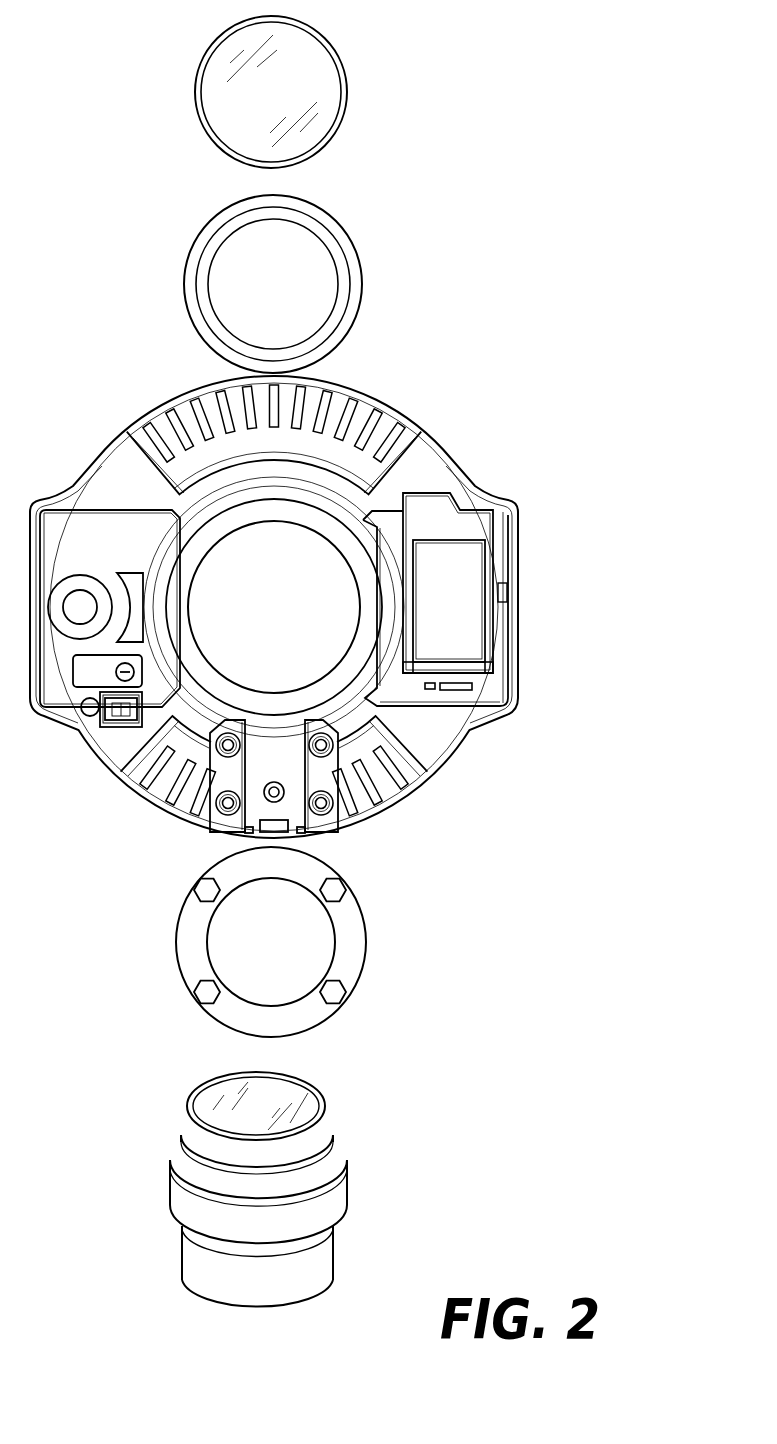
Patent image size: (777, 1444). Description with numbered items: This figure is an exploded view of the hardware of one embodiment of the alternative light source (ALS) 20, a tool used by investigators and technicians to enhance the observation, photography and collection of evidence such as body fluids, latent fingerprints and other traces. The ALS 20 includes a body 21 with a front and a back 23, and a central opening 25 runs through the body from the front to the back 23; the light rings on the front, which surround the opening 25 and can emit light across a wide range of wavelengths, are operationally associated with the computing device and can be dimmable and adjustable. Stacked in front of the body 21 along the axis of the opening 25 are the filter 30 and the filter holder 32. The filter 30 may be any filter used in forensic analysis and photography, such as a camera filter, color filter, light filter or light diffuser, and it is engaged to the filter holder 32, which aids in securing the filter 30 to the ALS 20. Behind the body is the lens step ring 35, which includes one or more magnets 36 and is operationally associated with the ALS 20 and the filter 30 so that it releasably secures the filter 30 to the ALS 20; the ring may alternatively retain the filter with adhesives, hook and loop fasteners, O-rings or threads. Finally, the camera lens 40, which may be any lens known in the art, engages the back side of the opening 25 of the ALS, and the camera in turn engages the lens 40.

The alternative light source 20 is at (457, 598).
The body 21 is at (321, 607).
The back 23 is at (457, 668).
The opening 25 is at (312, 657).
The filter 30 is at (307, 90).
The filter holder 32 is at (342, 275).
The lens step ring 35 is at (338, 942).
The magnets 36 is at (337, 994).
The camera lens 40 is at (310, 1210).